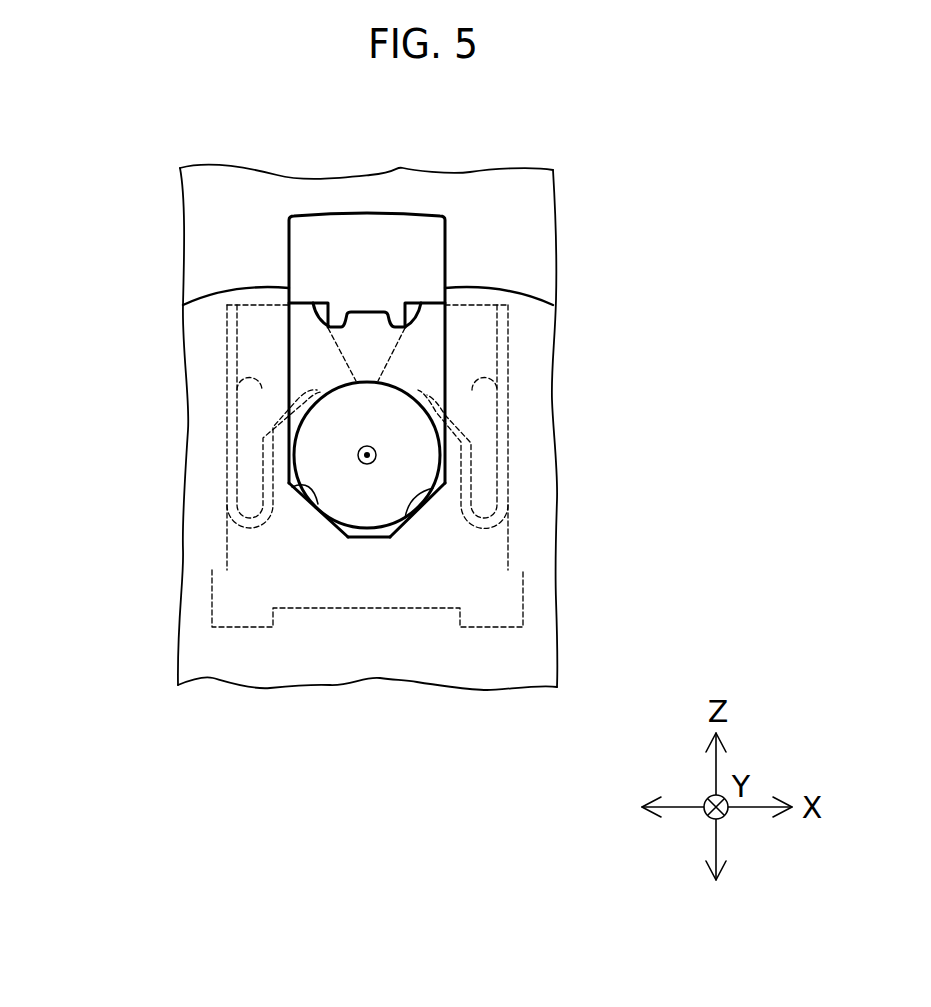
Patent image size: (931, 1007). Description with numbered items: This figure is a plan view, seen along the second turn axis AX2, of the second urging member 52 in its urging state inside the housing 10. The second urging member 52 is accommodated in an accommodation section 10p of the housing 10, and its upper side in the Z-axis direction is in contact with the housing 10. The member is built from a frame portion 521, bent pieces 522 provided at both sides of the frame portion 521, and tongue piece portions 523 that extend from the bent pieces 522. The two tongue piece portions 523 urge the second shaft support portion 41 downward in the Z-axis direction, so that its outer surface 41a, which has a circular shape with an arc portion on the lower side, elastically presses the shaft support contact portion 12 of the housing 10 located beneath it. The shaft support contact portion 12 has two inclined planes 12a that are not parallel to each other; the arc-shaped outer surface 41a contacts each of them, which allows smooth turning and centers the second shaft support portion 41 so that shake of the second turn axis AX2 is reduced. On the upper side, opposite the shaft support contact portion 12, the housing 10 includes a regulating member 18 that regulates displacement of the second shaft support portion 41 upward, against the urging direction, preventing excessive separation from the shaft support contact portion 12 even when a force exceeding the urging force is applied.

The housing 10 is at (545, 530).
The accommodation section 10p is at (248, 585).
The shaft support contact portion 12 is at (420, 533).
The inclined planes 12a is at (317, 487).
The regulating member 18 is at (382, 346).
The second shaft support portion 41 is at (375, 513).
The outer surface 41a is at (347, 527).
The second urging member 52 is at (508, 333).
The frame portion 521 is at (225, 555).
The bent pieces 522 is at (217, 487).
The tongue piece portions 523 is at (287, 398).
The second turn axis AX2 is at (358, 455).